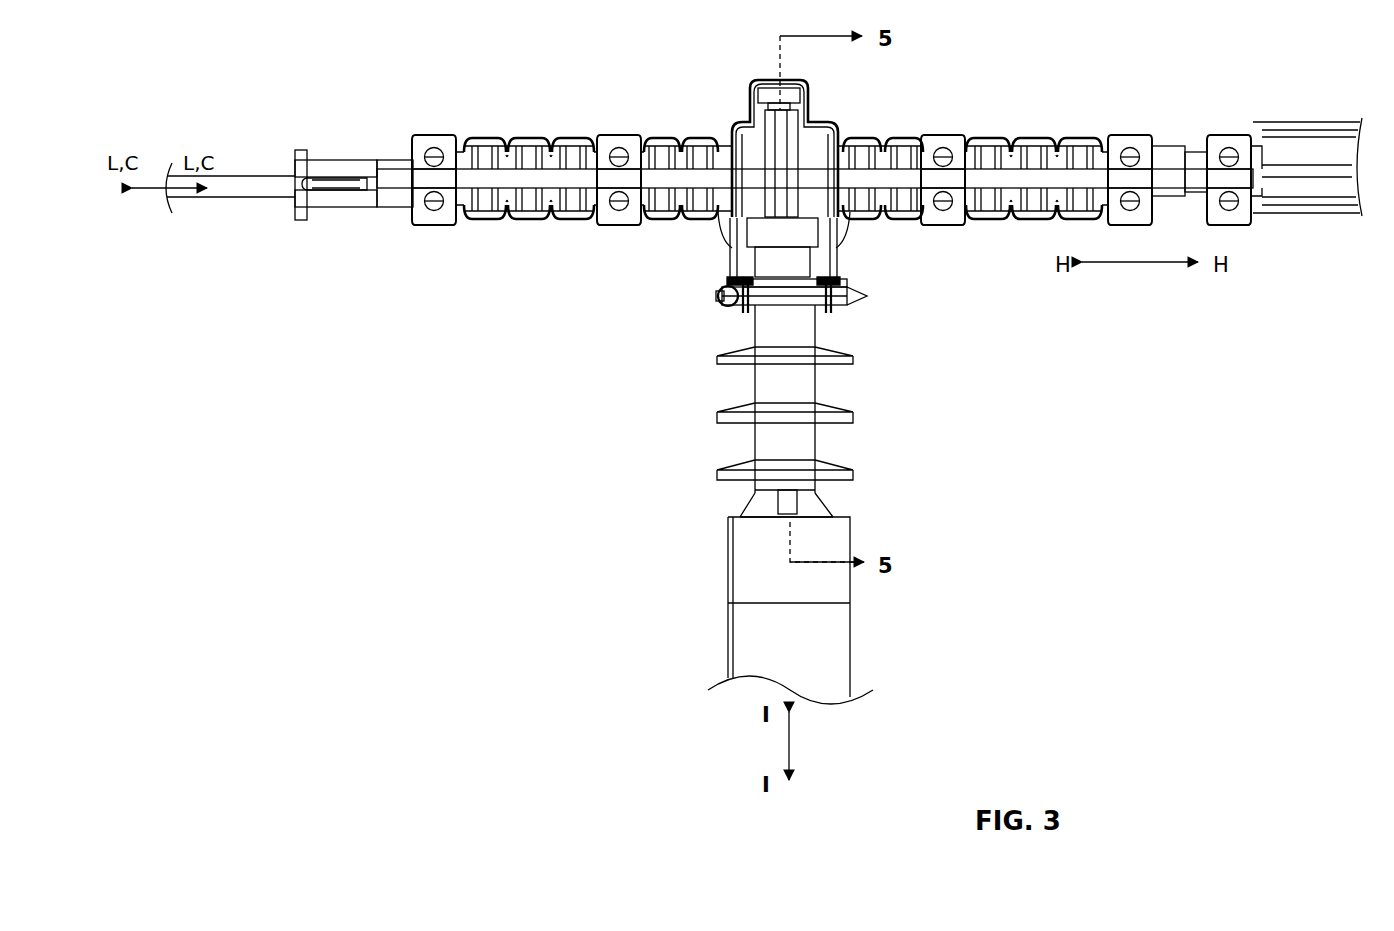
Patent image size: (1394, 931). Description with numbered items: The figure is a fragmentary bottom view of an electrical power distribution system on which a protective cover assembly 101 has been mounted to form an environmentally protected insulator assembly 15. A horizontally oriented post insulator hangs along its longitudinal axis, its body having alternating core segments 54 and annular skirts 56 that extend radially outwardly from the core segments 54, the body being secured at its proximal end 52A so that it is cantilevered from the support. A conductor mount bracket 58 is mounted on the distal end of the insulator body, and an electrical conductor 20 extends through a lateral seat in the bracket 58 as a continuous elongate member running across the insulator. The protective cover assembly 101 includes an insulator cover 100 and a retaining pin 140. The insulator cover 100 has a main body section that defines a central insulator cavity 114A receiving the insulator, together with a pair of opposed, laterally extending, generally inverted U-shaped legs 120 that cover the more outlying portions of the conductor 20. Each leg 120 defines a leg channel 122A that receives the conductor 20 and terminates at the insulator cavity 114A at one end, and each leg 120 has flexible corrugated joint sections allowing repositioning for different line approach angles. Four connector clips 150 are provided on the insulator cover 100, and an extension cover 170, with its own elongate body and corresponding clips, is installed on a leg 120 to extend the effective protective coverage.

The environmentally protected insulator assembly 15 is at (630, 307).
The electrical conductor 20 is at (710, 173).
The proximal end 52A is at (768, 508).
The core segments 54 is at (783, 267).
The annular skirts 56 is at (718, 363).
The conductor mount bracket 58 is at (767, 226).
The insulator cover 100 is at (992, 104).
The protective cover assembly 101 is at (482, 111).
The central insulator cavity 114A is at (812, 143).
The legs 120 is at (356, 213).
The leg channel 122A is at (523, 150).
The retaining pin 140 is at (802, 298).
The clips 150 is at (444, 224).
The extension cover 170 is at (1303, 114).